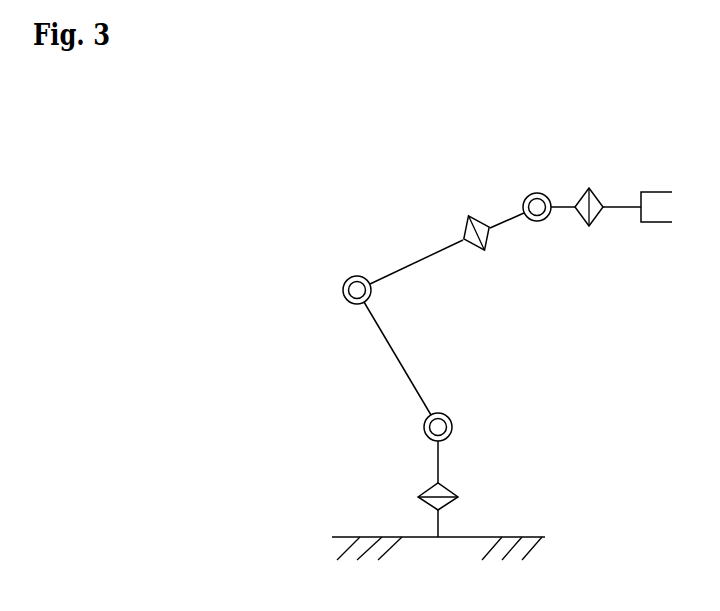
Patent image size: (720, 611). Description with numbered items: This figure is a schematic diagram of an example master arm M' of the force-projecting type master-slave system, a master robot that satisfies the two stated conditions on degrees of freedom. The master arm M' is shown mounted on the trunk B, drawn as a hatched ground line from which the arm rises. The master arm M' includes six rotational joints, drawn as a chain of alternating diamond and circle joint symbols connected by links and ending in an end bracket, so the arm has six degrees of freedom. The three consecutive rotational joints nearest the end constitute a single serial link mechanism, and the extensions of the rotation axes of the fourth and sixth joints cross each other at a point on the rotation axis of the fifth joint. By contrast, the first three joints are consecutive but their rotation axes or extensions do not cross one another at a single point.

The master arm M' is at (477, 339).
The trunk B is at (370, 534).